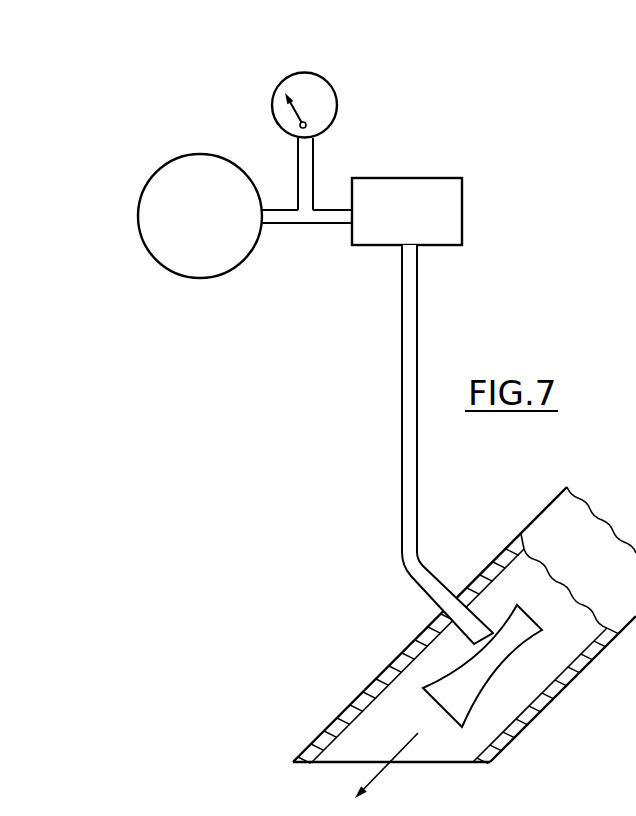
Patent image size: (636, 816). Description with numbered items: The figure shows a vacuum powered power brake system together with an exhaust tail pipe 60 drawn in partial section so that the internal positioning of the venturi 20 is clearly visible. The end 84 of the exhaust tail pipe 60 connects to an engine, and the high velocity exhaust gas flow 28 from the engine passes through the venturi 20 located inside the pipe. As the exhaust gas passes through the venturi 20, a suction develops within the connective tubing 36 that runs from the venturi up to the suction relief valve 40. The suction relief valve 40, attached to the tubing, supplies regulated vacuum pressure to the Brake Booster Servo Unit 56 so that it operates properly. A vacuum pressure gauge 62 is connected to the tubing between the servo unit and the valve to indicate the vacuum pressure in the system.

The Brake Booster Servo Unit 56 is at (200, 156).
The vacuum pressure gauge 62 is at (332, 90).
The suction relief valve 40 is at (392, 178).
The connective tubing 36 is at (402, 392).
The exhaust tail pipe 60 is at (528, 522).
The end 84 is at (588, 505).
The venturi 20 is at (496, 668).
The exhaust gas flow 28 is at (388, 766).